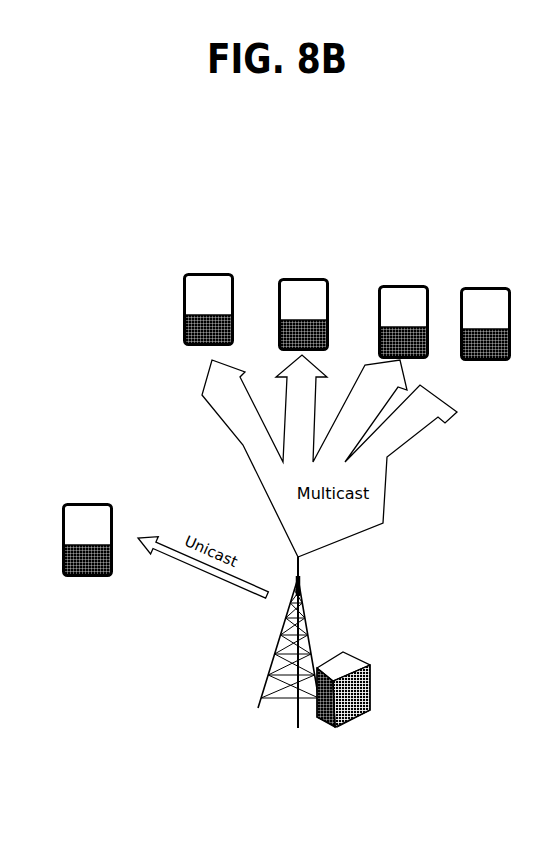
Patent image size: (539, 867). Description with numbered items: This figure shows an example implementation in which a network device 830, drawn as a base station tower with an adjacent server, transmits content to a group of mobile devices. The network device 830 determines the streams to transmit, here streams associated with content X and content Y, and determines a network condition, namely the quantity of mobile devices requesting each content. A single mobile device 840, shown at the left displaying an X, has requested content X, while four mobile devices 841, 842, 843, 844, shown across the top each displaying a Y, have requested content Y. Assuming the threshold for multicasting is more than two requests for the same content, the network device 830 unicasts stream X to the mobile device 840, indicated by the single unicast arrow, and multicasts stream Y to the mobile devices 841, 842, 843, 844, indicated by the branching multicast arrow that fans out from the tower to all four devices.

The network device 830 is at (254, 681).
The mobile device 840 is at (82, 489).
The mobile device 841 is at (189, 275).
The mobile device 842 is at (289, 279).
The mobile device 843 is at (389, 285).
The mobile device 844 is at (487, 288).